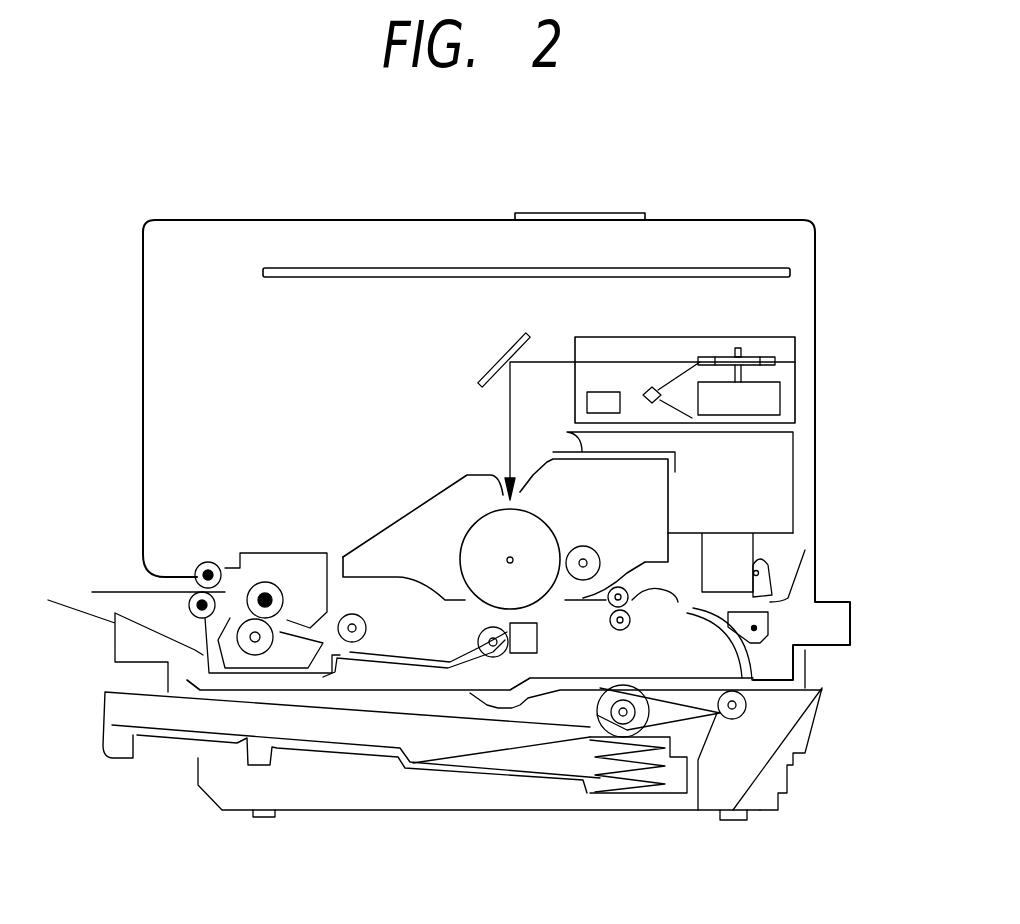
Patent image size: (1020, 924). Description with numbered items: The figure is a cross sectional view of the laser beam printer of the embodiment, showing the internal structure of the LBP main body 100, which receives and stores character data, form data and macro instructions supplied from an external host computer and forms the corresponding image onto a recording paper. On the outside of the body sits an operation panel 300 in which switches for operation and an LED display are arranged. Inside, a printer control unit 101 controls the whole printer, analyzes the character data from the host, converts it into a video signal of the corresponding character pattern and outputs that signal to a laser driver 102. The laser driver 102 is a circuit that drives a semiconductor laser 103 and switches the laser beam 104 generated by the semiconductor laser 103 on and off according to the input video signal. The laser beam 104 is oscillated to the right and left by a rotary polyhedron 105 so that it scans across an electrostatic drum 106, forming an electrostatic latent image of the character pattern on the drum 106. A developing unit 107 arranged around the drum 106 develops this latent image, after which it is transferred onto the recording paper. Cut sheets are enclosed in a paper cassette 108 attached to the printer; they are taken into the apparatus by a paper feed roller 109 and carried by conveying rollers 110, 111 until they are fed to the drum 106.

The LBP main body 100 is at (757, 220).
The operation panel 300 is at (598, 215).
The printer control unit 101 is at (790, 271).
The laser driver 102 is at (587, 398).
The semiconductor laser 103 is at (660, 403).
The laser beam 104 is at (670, 361).
The rotary polyhedron 105 is at (775, 361).
The electrostatic drum 106 is at (478, 520).
The developing unit 107 is at (398, 547).
The paper cassette 108 is at (103, 713).
The paper feed roller 109 is at (597, 717).
The conveying roller 110 is at (728, 720).
The conveying roller 111 is at (528, 651).